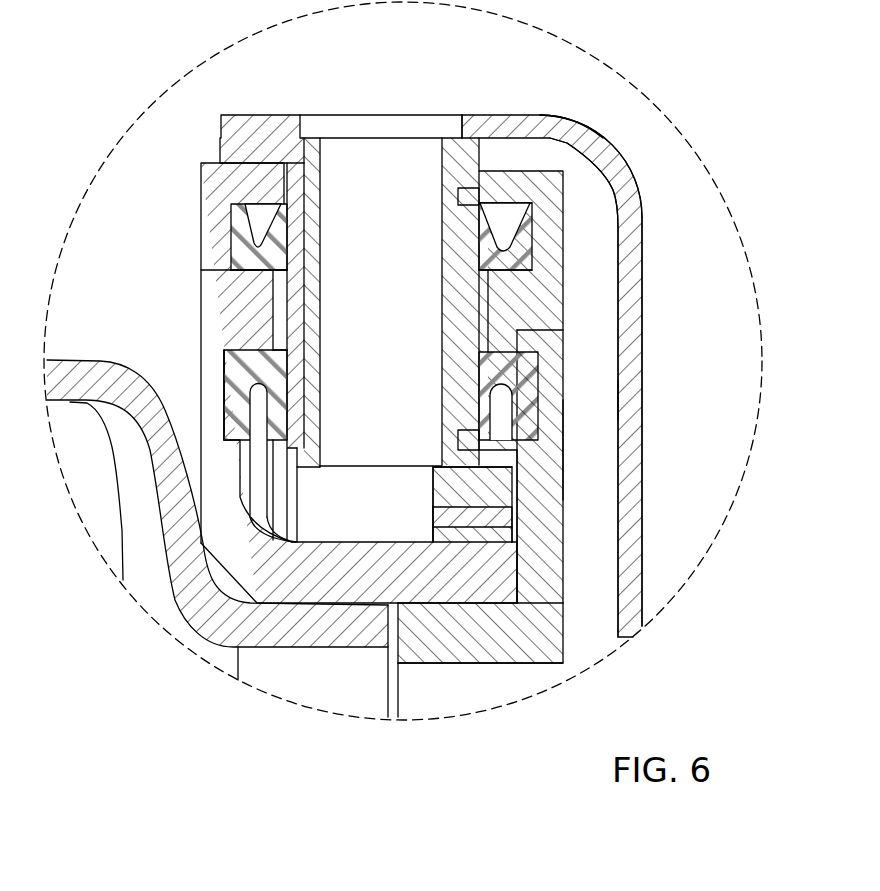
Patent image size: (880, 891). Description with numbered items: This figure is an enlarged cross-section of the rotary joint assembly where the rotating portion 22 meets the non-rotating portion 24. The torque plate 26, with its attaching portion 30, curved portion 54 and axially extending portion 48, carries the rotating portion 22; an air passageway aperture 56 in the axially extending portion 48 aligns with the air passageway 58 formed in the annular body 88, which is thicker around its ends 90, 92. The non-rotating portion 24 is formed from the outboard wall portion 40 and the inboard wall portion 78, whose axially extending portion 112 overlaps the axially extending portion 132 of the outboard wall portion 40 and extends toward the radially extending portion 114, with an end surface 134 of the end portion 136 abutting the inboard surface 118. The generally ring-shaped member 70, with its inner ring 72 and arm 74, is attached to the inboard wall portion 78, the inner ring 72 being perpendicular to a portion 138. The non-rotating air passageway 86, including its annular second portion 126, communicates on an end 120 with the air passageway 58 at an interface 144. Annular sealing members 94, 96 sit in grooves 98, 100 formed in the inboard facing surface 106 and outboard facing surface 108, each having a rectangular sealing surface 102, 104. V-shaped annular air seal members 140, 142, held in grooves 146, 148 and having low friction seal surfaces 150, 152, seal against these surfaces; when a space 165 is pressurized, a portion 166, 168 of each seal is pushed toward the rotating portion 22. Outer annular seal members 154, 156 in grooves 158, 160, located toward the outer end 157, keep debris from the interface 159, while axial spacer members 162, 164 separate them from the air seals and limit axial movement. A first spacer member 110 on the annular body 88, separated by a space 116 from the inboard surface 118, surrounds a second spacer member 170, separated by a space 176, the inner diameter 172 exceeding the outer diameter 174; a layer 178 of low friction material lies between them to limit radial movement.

The rotating portion 22 is at (458, 145).
The non-rotating portion 24 is at (235, 330).
The torque plate 26 is at (572, 152).
The attaching portion 30 is at (642, 338).
The outboard wall portion 40 is at (618, 400).
The axially extending portion 48 is at (478, 140).
The curved portion 54 is at (560, 127).
The air passageway aperture 56 is at (297, 145).
The air passageway 58 is at (396, 282).
The generally ring-shaped member 70 is at (168, 595).
The inner ring 72 is at (263, 647).
The radially extending arm 74 is at (147, 488).
The inboard wall portion 78 is at (212, 393).
The air passageway 86 is at (375, 511).
The annular body 88 is at (450, 308).
The end 90 is at (458, 145).
The end 92 is at (560, 440).
The annular sealing member 94 is at (297, 200).
The annular sealing member 96 is at (478, 207).
The groove 98 is at (312, 200).
The groove 100 is at (563, 195).
The sealing surface 102 is at (230, 252).
The sealing surface 104 is at (527, 228).
The inboard facing surface 106 is at (302, 455).
The outboard facing surface 108 is at (455, 448).
The first spacer member 110 is at (497, 475).
The axially extending portion 112 is at (500, 600).
The radially extending portion 114 is at (540, 470).
The space 116 is at (500, 515).
The inboard surface 118 is at (437, 470).
The end 120 is at (548, 455).
The second portion 126 is at (357, 525).
The axially extending portion 132 is at (503, 647).
The end surface 134 is at (497, 575).
The end portion 136 is at (500, 647).
The portion 138 is at (225, 347).
The annular air seal member 140 is at (233, 375).
The annular air seal member 142 is at (533, 370).
The interface 144 is at (320, 470).
The groove 146 is at (207, 410).
The groove 148 is at (560, 407).
The seal surface 150 is at (290, 375).
The seal surface 152 is at (530, 370).
The outer annular seal member 154 is at (230, 212).
The outer annular seal member 156 is at (530, 213).
The outer end 157 is at (577, 120).
The groove 158 is at (230, 232).
The interface 159 is at (477, 172).
The groove 160 is at (535, 263).
The axial spacer member 162 is at (275, 300).
The axial spacer member 164 is at (483, 333).
The space 165 is at (558, 438).
The portion 166 is at (290, 425).
The portion 168 is at (515, 421).
The second spacer member 170 is at (495, 573).
The inner diameter 172 is at (472, 507).
The outer diameter 174 is at (450, 525).
The space 176 is at (497, 537).
The layer 178 is at (513, 530).